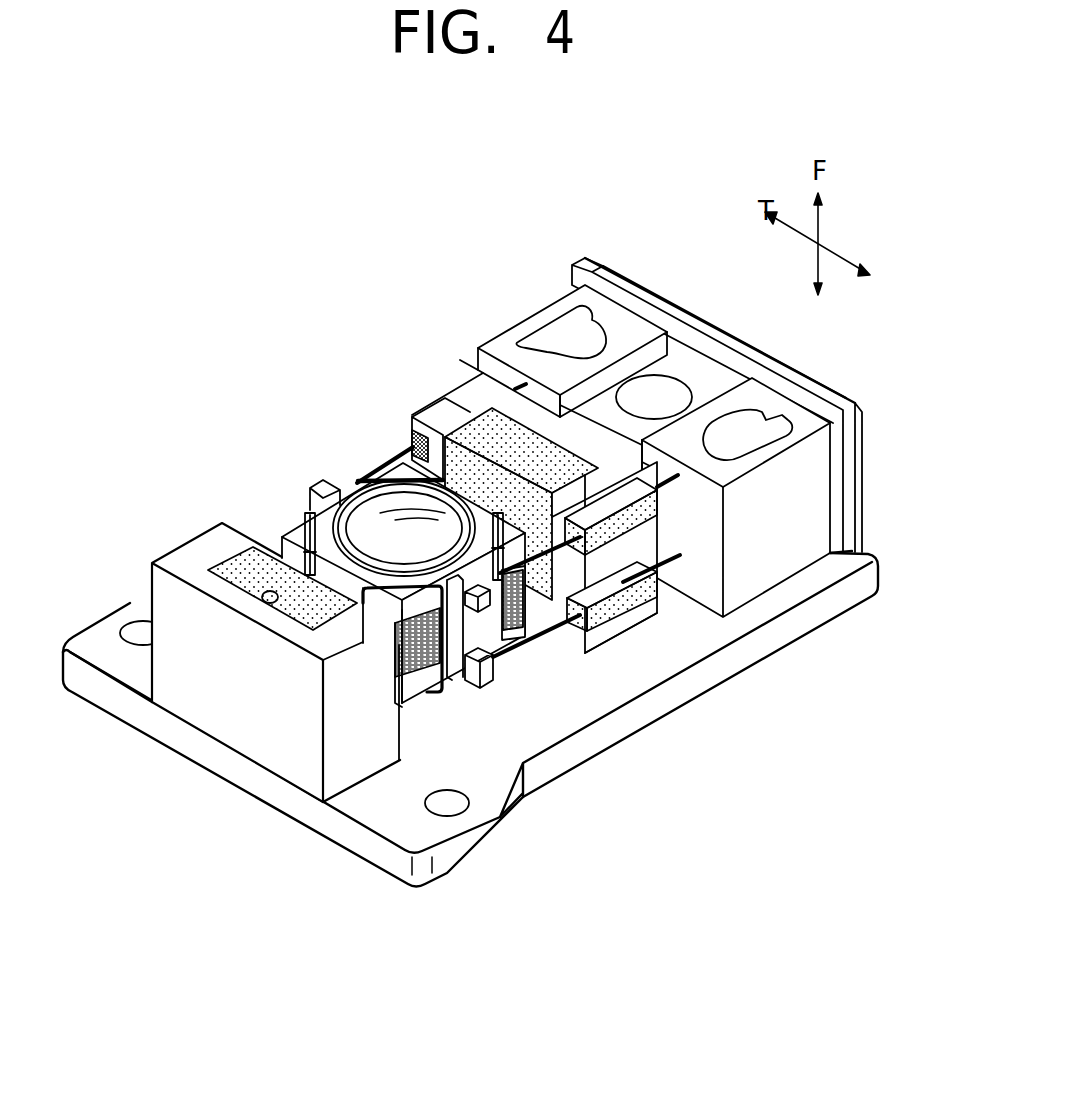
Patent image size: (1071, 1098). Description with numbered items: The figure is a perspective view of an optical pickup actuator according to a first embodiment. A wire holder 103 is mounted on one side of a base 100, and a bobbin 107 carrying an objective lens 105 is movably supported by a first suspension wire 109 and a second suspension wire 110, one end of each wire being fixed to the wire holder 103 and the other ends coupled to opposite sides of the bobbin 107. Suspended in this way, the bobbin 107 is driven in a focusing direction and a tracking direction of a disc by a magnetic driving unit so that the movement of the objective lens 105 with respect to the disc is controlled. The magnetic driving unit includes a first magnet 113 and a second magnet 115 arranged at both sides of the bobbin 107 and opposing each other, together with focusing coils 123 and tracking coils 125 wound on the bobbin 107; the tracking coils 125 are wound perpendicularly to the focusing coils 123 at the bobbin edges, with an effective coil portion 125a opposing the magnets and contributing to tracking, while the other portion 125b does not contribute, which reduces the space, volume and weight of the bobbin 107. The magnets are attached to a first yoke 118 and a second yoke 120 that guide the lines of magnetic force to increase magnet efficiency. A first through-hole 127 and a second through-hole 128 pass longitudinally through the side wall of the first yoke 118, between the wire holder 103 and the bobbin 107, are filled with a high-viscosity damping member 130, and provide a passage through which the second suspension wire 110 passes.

The base 100 is at (833, 573).
The wire holder 103 is at (780, 533).
The objective lens 105 is at (380, 507).
The bobbin 107 is at (403, 555).
The first suspension wire 109 is at (405, 450).
The second suspension wire 110 is at (562, 608).
The first magnet 113 is at (468, 433).
The second magnet 115 is at (263, 558).
The first yoke 118 is at (723, 303).
The second yoke 120 is at (237, 619).
The focusing coil 123 is at (415, 690).
The tracking coil 125 is at (305, 515).
The effective coil portion 125a is at (363, 603).
The other coil portion 125b is at (458, 692).
The first through-hole 127 is at (633, 612).
The second through-hole 128 is at (587, 624).
The damping member 130 is at (640, 605).